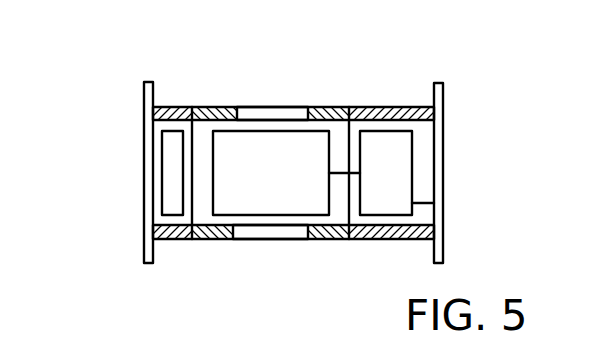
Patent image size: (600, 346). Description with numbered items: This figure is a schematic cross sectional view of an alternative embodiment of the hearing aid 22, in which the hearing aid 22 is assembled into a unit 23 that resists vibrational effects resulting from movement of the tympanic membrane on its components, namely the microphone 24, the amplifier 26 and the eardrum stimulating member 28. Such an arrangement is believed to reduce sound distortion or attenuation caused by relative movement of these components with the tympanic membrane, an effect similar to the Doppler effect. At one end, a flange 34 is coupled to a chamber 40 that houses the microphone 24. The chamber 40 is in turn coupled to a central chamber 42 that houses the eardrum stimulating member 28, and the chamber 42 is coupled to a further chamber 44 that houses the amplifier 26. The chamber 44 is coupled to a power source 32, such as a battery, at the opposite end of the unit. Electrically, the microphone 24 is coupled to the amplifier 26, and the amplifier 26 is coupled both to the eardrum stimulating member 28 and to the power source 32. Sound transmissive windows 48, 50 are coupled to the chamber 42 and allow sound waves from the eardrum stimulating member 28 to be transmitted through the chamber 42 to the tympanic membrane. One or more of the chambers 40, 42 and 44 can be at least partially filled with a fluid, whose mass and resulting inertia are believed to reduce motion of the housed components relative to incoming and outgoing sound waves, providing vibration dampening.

The hearing aid 22 is at (130, 106).
The unit 23 is at (185, 246).
The microphone 24 is at (173, 170).
The amplifier 26 is at (390, 153).
The eardrum stimulating member 28 is at (302, 148).
The power source 32 is at (445, 227).
The flange 34 is at (145, 263).
The chamber 40 is at (185, 125).
The chamber 42 is at (226, 123).
The chamber 44 is at (364, 124).
The sound transmissive window 48 is at (272, 113).
The sound transmissive window 50 is at (268, 233).